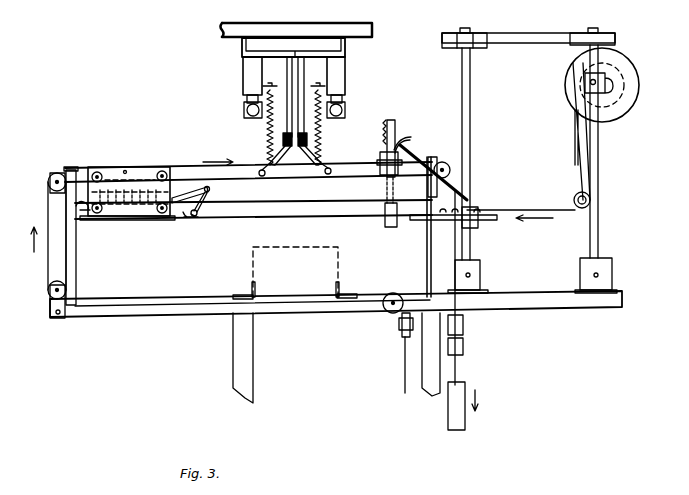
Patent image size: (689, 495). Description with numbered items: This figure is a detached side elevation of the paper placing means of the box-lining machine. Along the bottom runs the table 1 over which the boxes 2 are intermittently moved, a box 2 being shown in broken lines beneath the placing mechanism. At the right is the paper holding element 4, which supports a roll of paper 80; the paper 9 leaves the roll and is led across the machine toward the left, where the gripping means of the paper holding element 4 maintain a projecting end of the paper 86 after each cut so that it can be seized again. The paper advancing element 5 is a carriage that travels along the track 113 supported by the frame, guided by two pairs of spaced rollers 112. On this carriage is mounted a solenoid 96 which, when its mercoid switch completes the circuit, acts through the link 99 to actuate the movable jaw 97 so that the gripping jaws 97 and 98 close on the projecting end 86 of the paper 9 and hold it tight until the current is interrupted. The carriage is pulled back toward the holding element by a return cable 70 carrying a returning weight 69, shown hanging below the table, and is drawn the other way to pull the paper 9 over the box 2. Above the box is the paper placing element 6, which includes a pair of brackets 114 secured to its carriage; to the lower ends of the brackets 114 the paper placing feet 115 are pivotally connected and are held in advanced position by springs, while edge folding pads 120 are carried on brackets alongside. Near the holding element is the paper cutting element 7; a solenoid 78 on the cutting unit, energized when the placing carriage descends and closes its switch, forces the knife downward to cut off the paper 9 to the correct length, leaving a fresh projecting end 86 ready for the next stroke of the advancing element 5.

The table 1 is at (558, 306).
The boxes 2 is at (252, 268).
The paper holding element 4 is at (621, 119).
The paper advancing element 5 is at (133, 160).
The paper placing element 6 is at (236, 76).
The paper cutting element 7 is at (405, 130).
The paper 9 is at (548, 211).
The weight 69 is at (452, 412).
The return cable 70 is at (403, 374).
The solenoid 78 is at (380, 160).
The roll of paper 80 is at (626, 62).
The projecting end of the paper 86 is at (289, 219).
The solenoid 96 is at (108, 224).
The movable gripping jaw 97 is at (197, 213).
The gripping jaw 98 is at (187, 223).
The link 99 is at (184, 190).
The rollers 112 is at (163, 170).
The track 113 is at (340, 200).
The brackets 114 is at (302, 81).
The paper placing feet 115 is at (316, 173).
The edge folding pads 120 is at (346, 107).